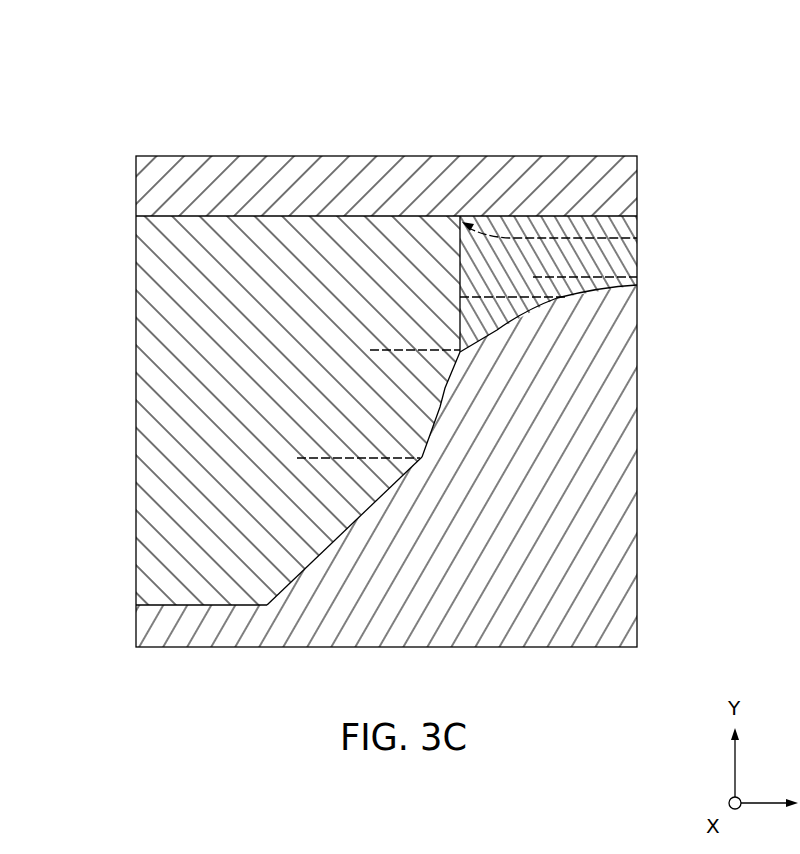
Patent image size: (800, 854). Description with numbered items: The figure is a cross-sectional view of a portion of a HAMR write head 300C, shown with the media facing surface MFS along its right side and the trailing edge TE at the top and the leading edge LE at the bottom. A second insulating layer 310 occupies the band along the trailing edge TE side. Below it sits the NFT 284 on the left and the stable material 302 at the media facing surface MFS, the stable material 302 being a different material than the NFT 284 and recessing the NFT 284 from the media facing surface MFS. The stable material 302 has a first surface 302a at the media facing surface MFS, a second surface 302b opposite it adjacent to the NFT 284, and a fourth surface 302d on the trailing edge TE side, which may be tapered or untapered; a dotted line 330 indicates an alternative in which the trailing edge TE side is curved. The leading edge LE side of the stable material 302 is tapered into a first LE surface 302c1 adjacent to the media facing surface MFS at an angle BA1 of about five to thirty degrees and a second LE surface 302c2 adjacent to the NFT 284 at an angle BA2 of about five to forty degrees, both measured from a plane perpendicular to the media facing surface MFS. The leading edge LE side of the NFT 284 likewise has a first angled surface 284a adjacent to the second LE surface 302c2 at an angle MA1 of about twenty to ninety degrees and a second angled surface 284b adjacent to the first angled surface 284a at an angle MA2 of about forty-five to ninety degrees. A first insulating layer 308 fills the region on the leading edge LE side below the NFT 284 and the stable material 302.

The HAMR write head 300C is at (228, 86).
The second insulating layer 310 is at (219, 197).
The trailing edge TE is at (353, 184).
The NFT 284 is at (232, 397).
The stable material 302 is at (512, 272).
The first insulating layer 308 is at (547, 598).
The leading edge LE is at (569, 459).
The second surface 302b is at (460, 287).
The first LE surface 302c1 is at (626, 293).
The second LE surface 302c2 is at (525, 317).
The first angled surface 284a is at (440, 407).
The second angled surface 284b is at (329, 547).
The first surface 302a is at (637, 262).
The fourth surface 302d is at (593, 214).
The dotted line 330 is at (497, 236).
The first angle MA1 is at (445, 389).
The second angle MA2 is at (363, 512).
The first angle BA1 is at (563, 278).
The second angle BA2 is at (492, 298).
The media facing surface MFS is at (655, 386).